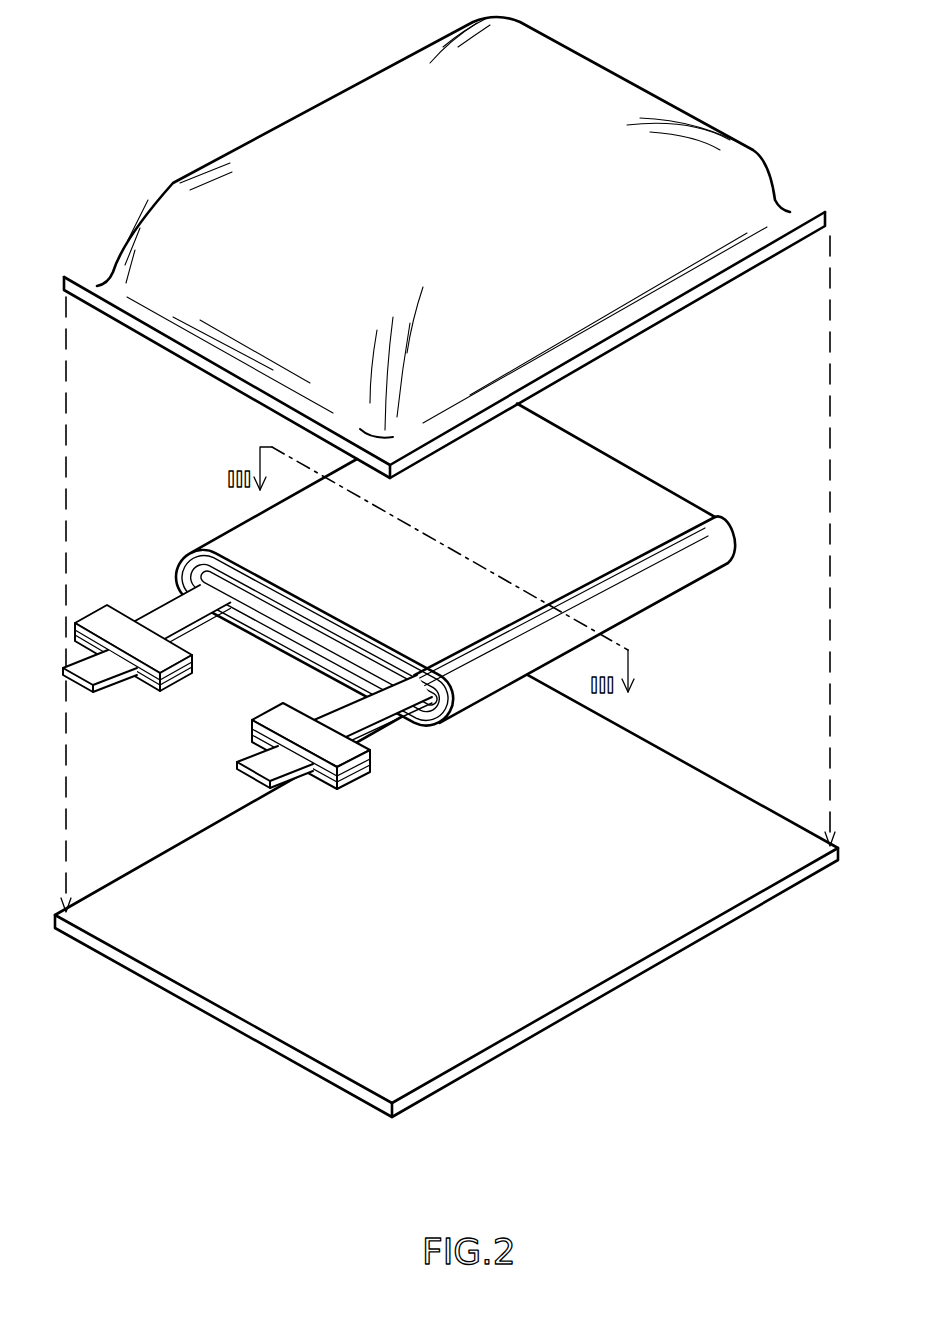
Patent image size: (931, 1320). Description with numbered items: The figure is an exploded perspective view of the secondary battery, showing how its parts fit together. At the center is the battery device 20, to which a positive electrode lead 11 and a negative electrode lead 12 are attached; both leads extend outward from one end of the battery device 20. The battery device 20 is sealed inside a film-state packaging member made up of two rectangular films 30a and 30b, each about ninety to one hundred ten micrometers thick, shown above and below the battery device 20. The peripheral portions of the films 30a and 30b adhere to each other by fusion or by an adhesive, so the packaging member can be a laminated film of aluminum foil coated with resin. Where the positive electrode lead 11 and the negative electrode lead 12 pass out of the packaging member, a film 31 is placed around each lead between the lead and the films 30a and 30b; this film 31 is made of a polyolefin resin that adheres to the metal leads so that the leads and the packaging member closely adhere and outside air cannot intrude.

The battery device 20 is at (568, 483).
The positive electrode lead 11 is at (100, 670).
The negative electrode lead 12 is at (254, 764).
The film 31 is at (167, 657).
The rectangular film 30a is at (603, 77).
The rectangular film 30b is at (655, 765).